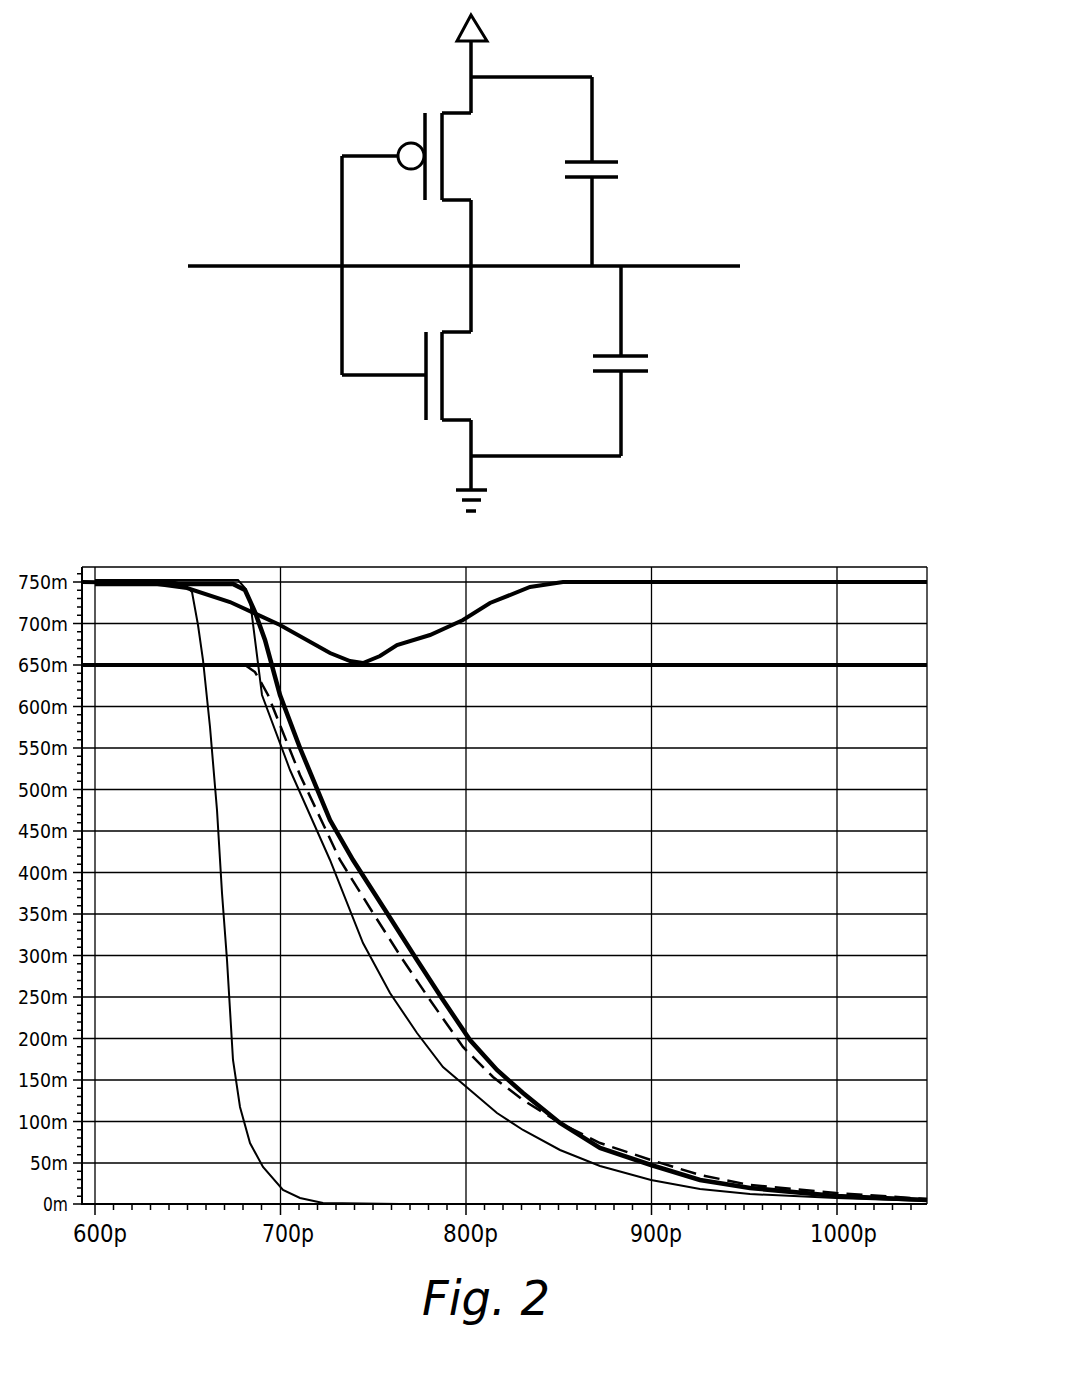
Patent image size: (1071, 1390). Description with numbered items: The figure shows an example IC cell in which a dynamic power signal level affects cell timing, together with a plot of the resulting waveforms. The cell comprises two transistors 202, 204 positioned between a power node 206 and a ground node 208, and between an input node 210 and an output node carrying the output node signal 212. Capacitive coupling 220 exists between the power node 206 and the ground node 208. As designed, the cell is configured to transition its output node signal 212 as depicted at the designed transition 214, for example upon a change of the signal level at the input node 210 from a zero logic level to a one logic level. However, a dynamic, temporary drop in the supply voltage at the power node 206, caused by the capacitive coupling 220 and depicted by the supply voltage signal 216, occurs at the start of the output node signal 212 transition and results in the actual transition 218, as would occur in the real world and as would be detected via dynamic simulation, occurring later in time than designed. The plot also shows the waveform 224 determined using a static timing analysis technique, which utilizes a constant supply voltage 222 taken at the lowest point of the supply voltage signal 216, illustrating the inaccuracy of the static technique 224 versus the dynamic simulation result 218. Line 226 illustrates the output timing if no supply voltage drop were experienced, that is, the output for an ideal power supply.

The transistor 202 is at (423, 128).
The transistor 204 is at (457, 331).
The power node 206 is at (466, 33).
The ground node 208 is at (455, 499).
The input node 210 is at (242, 265).
The output node signal 212 is at (667, 265).
The capacitive coupling 220 is at (627, 168).
The designed output transition 214 is at (230, 1057).
The supply voltage signal 216 is at (490, 604).
The actual transition 218 is at (511, 892).
The supply voltage 222 is at (504, 724).
The static timing analysis waveform 224 is at (583, 932).
The ideal power supply output 226 is at (511, 890).